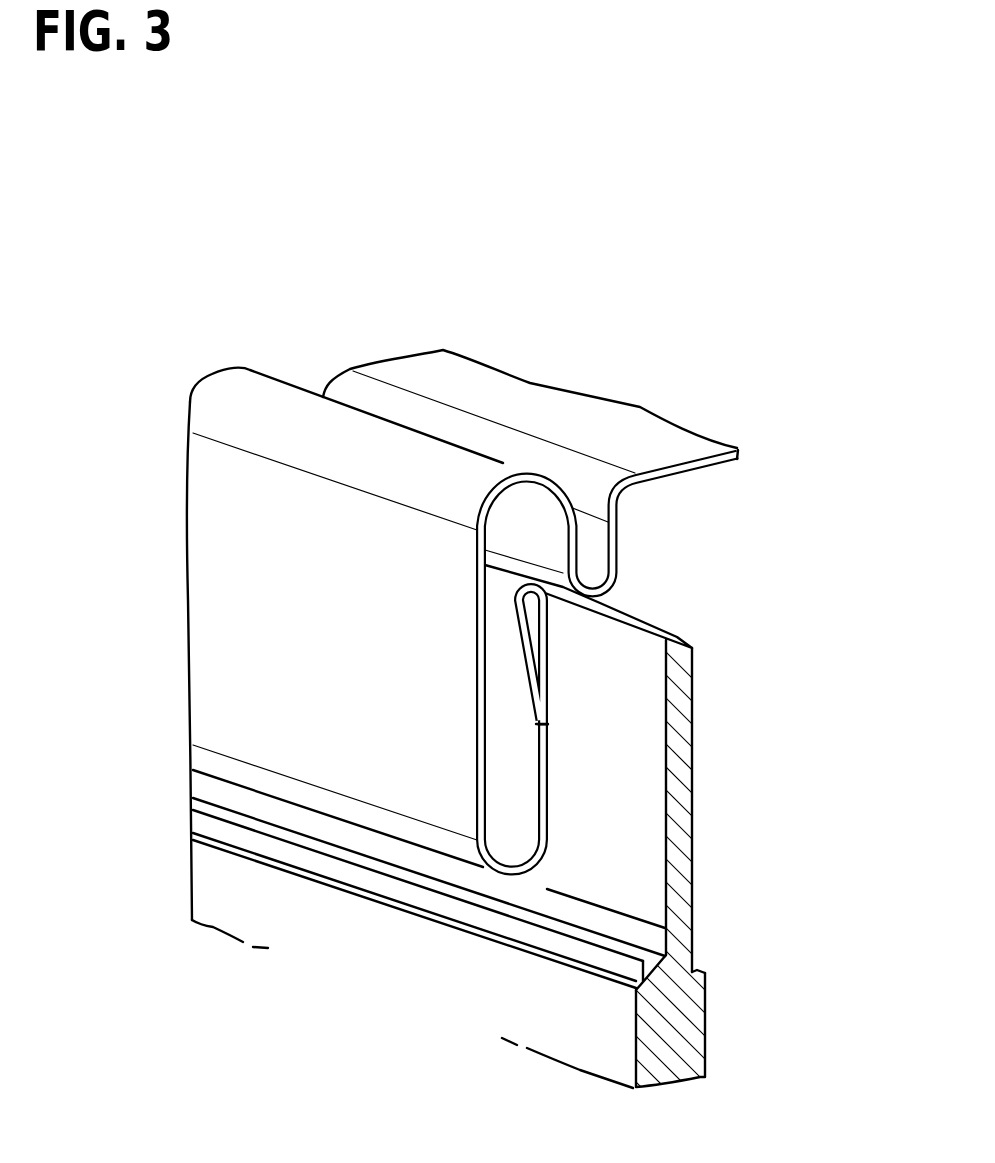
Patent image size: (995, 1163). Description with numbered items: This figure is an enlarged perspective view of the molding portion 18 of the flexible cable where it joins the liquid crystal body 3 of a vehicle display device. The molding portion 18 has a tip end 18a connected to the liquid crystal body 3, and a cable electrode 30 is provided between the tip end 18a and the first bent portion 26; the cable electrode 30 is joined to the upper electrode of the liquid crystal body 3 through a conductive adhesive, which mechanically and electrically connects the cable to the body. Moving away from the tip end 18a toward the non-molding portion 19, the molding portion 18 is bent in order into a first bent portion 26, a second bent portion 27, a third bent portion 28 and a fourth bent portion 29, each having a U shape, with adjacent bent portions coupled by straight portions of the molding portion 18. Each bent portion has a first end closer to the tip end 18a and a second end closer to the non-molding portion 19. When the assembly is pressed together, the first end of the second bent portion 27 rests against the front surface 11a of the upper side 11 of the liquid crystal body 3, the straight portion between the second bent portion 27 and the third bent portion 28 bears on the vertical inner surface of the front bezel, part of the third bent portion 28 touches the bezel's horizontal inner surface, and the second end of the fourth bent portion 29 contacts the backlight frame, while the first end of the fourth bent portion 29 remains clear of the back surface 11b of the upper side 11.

The liquid crystal body 3 is at (717, 1048).
The upper side 11 is at (690, 887).
The front surface 11a is at (638, 902).
The back surface 11b is at (690, 850).
The molding portion 18 is at (183, 368).
The tip end 18a is at (543, 727).
The non-molding portion 19 is at (710, 440).
The first bent portion 26 is at (530, 583).
The second bent portion 27 is at (511, 877).
The third bent portion 28 is at (505, 468).
The fourth bent portion 29 is at (613, 590).
The cable electrode 30 is at (548, 670).